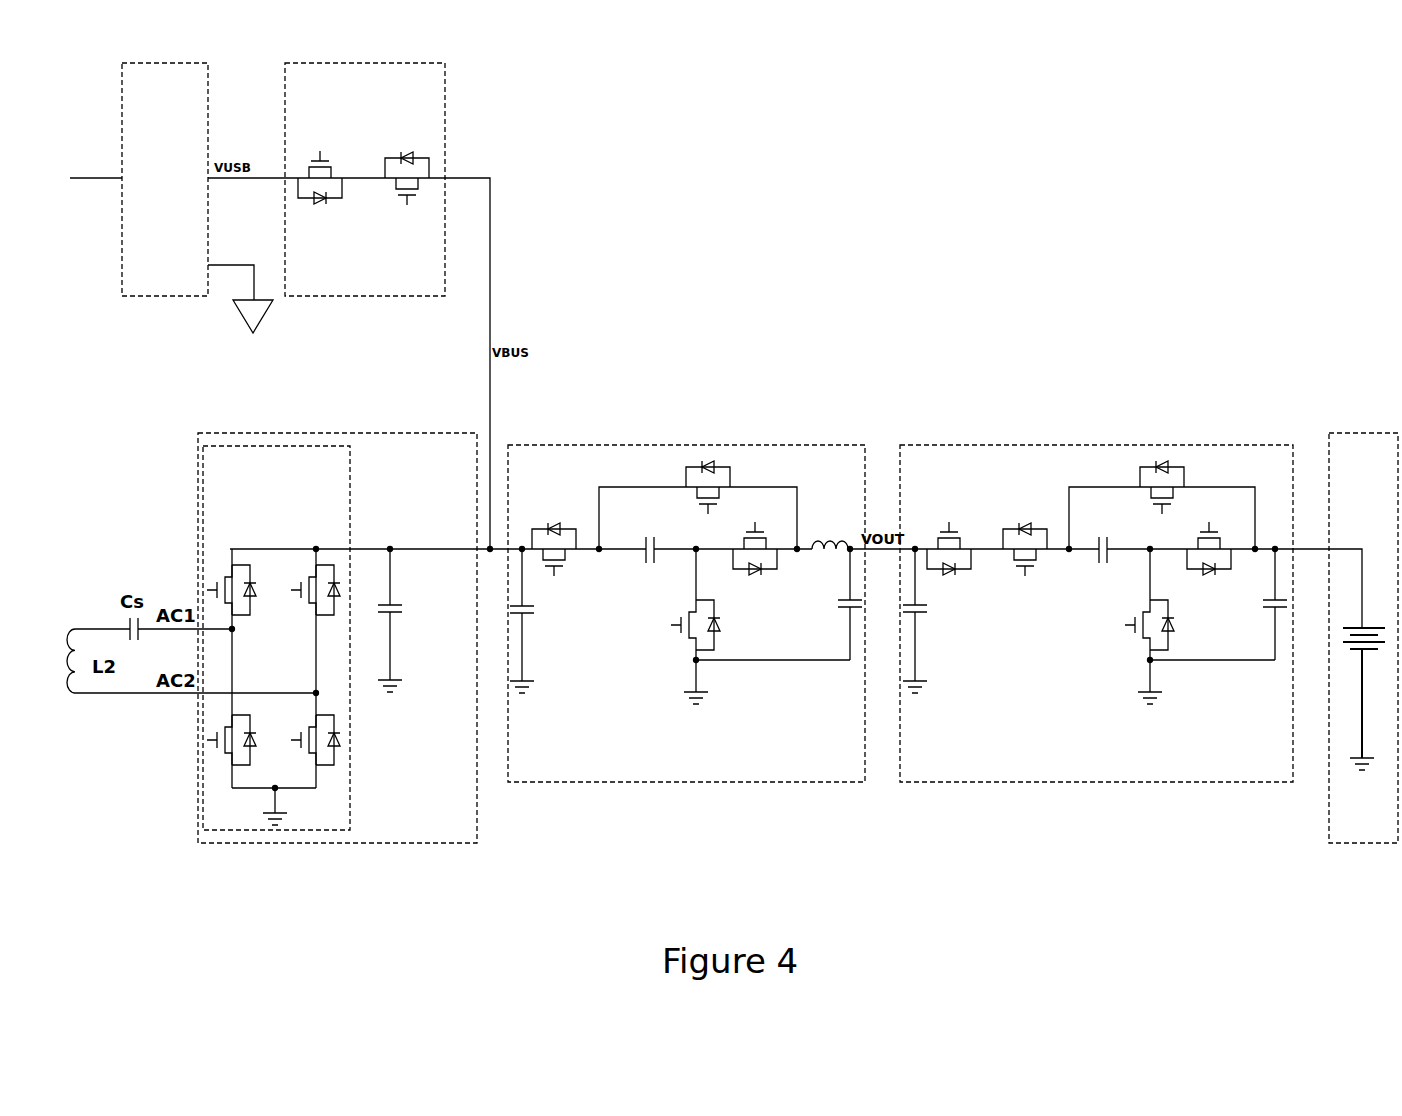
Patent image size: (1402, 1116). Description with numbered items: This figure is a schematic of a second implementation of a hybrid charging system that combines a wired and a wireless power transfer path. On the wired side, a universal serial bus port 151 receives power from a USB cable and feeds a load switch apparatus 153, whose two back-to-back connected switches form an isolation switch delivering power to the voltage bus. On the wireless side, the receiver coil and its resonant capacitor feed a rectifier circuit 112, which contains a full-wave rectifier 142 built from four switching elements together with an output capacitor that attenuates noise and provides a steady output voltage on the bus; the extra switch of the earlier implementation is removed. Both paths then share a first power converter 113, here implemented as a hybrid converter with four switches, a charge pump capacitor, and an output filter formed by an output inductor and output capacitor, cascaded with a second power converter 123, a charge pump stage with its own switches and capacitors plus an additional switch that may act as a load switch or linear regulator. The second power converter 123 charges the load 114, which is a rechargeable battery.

The universal serial bus (USB) port 151 is at (158, 296).
The load switch apparatus 153 is at (428, 286).
The rectifier 142 is at (334, 482).
The rectifier circuit 112 is at (345, 638).
The first power converter (hybrid converter) 113 is at (846, 770).
The second power converter 123 is at (1284, 770).
The load 114 is at (1388, 830).